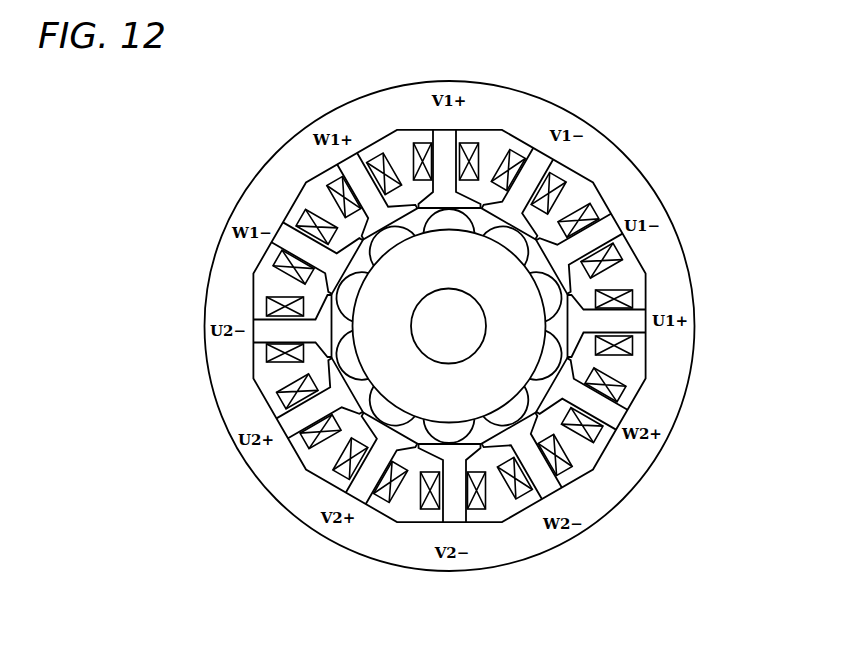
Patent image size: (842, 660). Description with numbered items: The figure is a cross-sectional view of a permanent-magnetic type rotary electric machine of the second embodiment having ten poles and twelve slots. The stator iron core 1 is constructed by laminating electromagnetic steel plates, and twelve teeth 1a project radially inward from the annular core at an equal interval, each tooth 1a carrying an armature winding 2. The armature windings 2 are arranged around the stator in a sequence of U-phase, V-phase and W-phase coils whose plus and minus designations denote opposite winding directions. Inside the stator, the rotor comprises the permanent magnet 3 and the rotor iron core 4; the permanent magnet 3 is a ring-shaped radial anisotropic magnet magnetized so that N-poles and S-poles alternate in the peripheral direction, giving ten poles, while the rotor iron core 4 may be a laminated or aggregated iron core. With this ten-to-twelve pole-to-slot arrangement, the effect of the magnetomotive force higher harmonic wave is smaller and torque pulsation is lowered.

The stator iron core 1 is at (673, 291).
The tooth 1a is at (622, 322).
The armature winding 2 is at (605, 212).
The permanent magnet 3 is at (340, 358).
The rotor iron core 4 is at (433, 402).